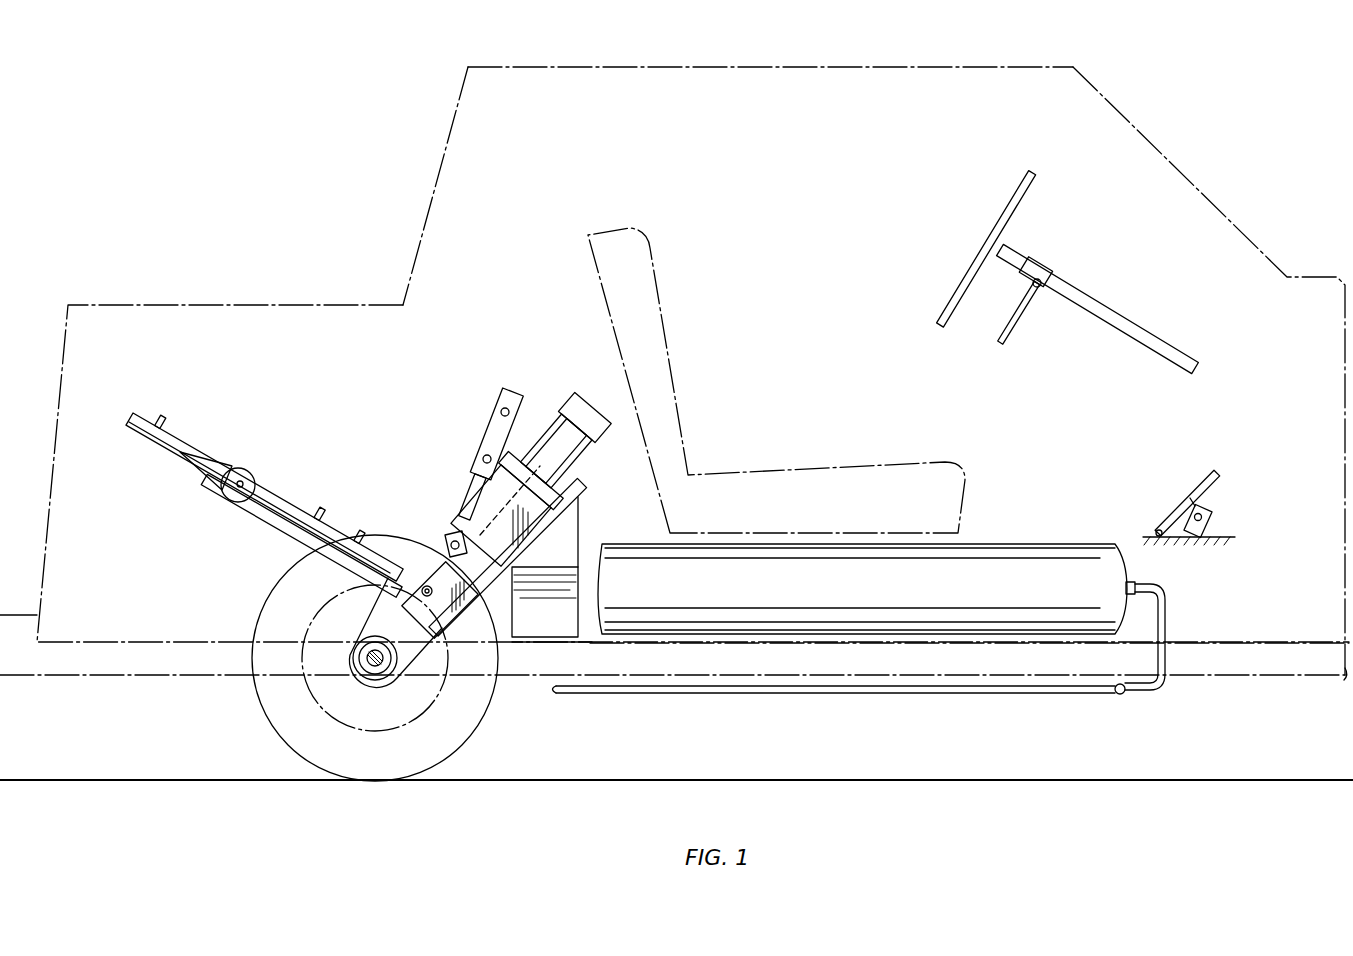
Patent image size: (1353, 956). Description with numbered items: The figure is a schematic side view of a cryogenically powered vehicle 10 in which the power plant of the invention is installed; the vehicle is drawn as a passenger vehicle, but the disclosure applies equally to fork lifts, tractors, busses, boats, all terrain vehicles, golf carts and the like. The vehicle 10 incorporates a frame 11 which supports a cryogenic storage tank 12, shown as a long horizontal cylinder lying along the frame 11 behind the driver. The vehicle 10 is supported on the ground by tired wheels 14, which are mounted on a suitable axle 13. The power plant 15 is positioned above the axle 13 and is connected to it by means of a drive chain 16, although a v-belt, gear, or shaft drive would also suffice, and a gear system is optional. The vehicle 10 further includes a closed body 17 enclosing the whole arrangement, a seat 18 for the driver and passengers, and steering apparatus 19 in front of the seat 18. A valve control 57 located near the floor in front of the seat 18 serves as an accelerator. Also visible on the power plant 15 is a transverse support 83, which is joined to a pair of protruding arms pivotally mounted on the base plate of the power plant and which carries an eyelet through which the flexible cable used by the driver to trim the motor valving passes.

The cryogenically powered vehicle 10 is at (1250, 163).
The frame 11 is at (1254, 688).
The cryogenic storage tank 12 is at (1032, 562).
The axle 13 is at (383, 665).
The tired wheels 14 is at (275, 718).
The power plant 15 is at (389, 396).
The drive chain 16 is at (360, 645).
The closed body 17 is at (458, 88).
The seat 18 is at (650, 258).
The steering apparatus 19 is at (1013, 190).
The valve control 57 is at (1205, 520).
The transverse support 83 is at (322, 508).